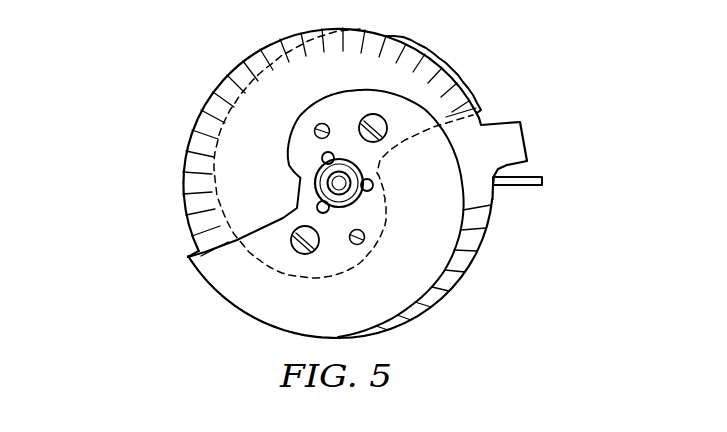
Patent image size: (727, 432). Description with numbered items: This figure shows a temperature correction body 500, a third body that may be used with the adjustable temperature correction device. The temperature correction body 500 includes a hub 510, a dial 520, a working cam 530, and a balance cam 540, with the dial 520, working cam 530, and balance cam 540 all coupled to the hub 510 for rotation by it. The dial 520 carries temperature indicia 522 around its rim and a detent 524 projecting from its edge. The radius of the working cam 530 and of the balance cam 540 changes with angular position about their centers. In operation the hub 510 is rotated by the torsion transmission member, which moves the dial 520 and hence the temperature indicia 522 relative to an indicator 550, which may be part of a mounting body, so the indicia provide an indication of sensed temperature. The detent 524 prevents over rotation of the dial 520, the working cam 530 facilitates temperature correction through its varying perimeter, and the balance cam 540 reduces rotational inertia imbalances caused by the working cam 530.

The temperature correction body 500 is at (120, 163).
The hub 510 is at (318, 185).
The dial 520 is at (428, 313).
The temperature indicia 522 is at (235, 58).
The detent 524 is at (527, 141).
The working cam 530 is at (213, 296).
The balance cam 540 is at (473, 88).
The indicator 550 is at (522, 186).